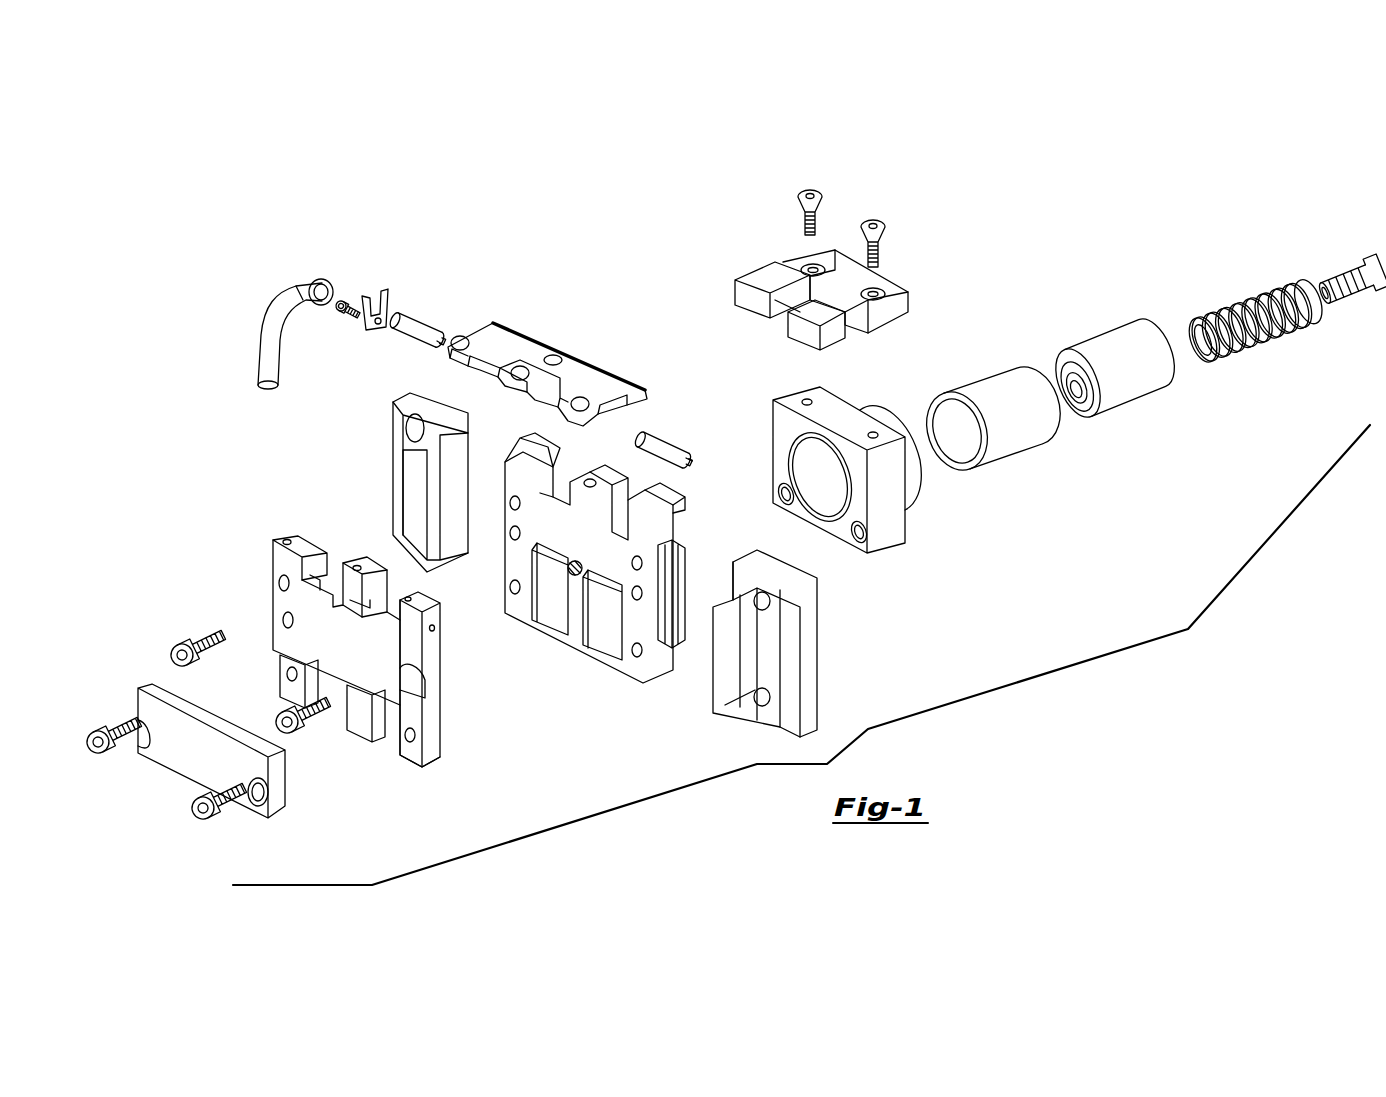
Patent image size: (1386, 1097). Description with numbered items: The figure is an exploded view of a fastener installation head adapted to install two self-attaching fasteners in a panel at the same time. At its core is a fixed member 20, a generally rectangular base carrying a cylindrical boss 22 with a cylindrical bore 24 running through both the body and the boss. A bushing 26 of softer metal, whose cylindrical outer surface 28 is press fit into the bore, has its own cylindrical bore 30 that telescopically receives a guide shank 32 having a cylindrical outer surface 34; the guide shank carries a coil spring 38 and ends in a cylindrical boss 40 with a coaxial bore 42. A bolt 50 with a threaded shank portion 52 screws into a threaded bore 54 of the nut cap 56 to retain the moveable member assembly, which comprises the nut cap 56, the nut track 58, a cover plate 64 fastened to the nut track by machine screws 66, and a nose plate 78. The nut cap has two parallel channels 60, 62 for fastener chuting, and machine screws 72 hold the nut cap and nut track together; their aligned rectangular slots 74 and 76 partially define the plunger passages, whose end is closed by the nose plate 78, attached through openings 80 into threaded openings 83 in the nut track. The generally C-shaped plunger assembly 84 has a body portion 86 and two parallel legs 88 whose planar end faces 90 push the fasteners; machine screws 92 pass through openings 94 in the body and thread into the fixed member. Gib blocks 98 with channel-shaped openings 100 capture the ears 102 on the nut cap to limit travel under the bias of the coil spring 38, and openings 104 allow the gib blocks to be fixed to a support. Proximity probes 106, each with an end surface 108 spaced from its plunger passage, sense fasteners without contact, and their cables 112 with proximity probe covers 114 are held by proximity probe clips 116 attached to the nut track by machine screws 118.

The fixed member 20 is at (845, 468).
The cylindrical boss 22 is at (887, 420).
The cylindrical bore 24 is at (800, 472).
The bushing 26 is at (994, 419).
The cylindrical outer surface 28 is at (987, 378).
The cylindrical bore 30 is at (957, 438).
The guide shank 32 is at (1114, 369).
The cylindrical outer surface 34 is at (1143, 390).
The coil spring 38 is at (1255, 345).
The cylindrical boss 40 is at (1077, 386).
The bore 42 is at (1076, 389).
The bolt 50 is at (1345, 252).
The threaded shank portion 52 is at (1347, 280).
The threaded bore 54 is at (569, 561).
The nut cap 56 is at (595, 586).
The nut track 58 is at (410, 762).
The channel 60 is at (600, 645).
The channel 62 is at (548, 620).
The cover plate 64 is at (184, 759).
The machine screws 66 is at (203, 806).
The machine screws 72 is at (280, 710).
The rectangular slots 74 is at (615, 492).
The rectangular slots 76 is at (368, 622).
The nose plate 78 is at (547, 355).
The openings 80 is at (523, 372).
The threaded openings 83 is at (286, 539).
The plunger assembly 84 is at (806, 282).
The body portion 86 is at (852, 275).
The legs 88 is at (745, 305).
The planar end faces 90 is at (800, 333).
The machine screws 92 is at (873, 222).
The openings 94 is at (812, 268).
The gib blocks 98 is at (386, 459).
The channel-shaped opening 100 is at (442, 494).
The ears 102 is at (686, 570).
The openings 104 is at (408, 418).
The proximity probe 106 is at (428, 323).
The end surface 108 is at (438, 345).
The cables 112 is at (262, 345).
The proximity probe cover 114 is at (296, 283).
The proximity probe clips 116 is at (381, 290).
The machine screws 118 is at (343, 310).